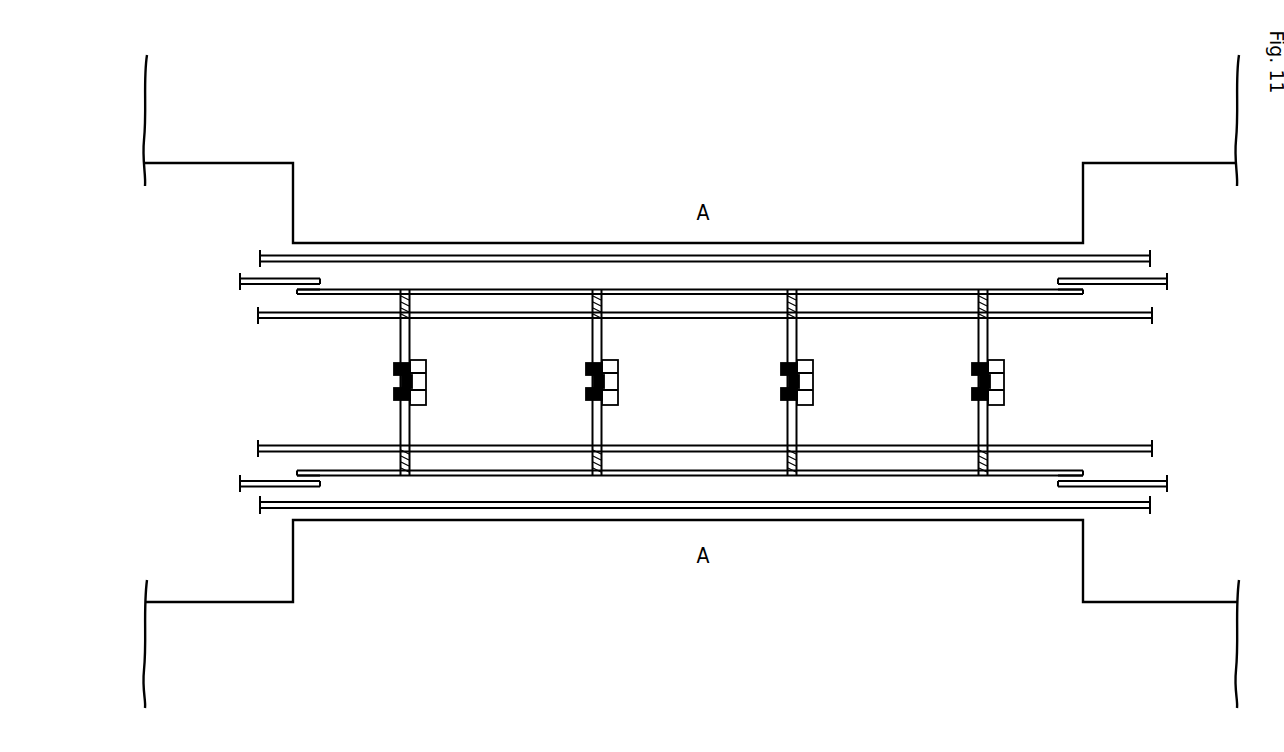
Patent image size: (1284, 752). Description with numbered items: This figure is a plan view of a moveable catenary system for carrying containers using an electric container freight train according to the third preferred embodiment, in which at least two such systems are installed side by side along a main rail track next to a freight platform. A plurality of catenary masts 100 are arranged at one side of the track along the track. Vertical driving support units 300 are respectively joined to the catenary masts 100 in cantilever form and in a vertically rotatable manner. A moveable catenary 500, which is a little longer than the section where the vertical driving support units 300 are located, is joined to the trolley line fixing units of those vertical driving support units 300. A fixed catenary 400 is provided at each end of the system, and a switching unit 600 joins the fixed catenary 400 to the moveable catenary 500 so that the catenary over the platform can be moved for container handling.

The catenary mast 100 is at (433, 378).
The vertical driving support unit 300 is at (414, 342).
The fixed catenary 400 is at (249, 274).
The moveable catenary 500 is at (641, 290).
The switching unit 600 is at (311, 285).